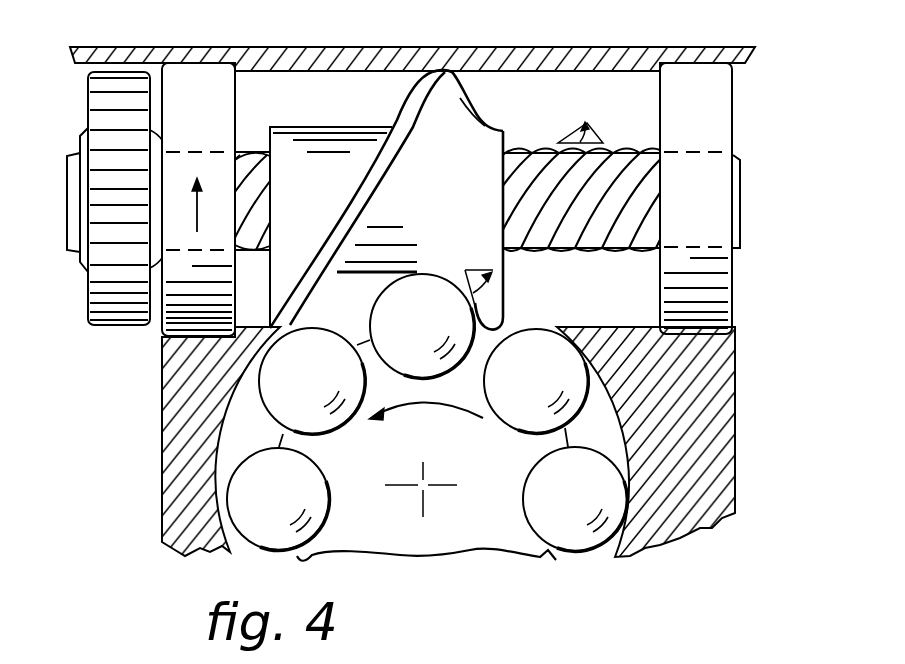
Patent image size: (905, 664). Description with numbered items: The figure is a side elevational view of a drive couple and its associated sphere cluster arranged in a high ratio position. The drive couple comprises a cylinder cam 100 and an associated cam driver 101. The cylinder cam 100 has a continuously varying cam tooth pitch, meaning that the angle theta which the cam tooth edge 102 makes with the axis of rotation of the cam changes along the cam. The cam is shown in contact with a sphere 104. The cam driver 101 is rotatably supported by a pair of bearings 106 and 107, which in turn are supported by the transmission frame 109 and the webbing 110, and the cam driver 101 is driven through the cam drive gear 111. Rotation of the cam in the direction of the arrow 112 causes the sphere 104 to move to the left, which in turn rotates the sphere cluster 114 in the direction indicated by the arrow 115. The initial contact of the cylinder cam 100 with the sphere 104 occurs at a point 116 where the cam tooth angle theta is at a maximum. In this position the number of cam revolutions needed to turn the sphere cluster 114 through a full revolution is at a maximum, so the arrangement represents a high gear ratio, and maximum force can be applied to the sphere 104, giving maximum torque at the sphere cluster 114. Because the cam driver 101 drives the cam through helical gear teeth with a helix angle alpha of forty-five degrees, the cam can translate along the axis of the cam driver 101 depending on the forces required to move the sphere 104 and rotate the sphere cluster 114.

The cylinder cam 100 is at (480, 133).
The cam driver 101 is at (600, 250).
The cam tooth edge 102 is at (452, 322).
The sphere 104 is at (418, 300).
The bearing 106 is at (207, 88).
The bearing 107 is at (717, 118).
The transmission frame 109 is at (502, 52).
The webbing 110 is at (720, 370).
The cam drive gear 111 is at (113, 298).
The arrow 112 is at (247, 158).
The sphere cluster 114 is at (458, 518).
The arrow 115 is at (438, 407).
The point 116 is at (452, 322).